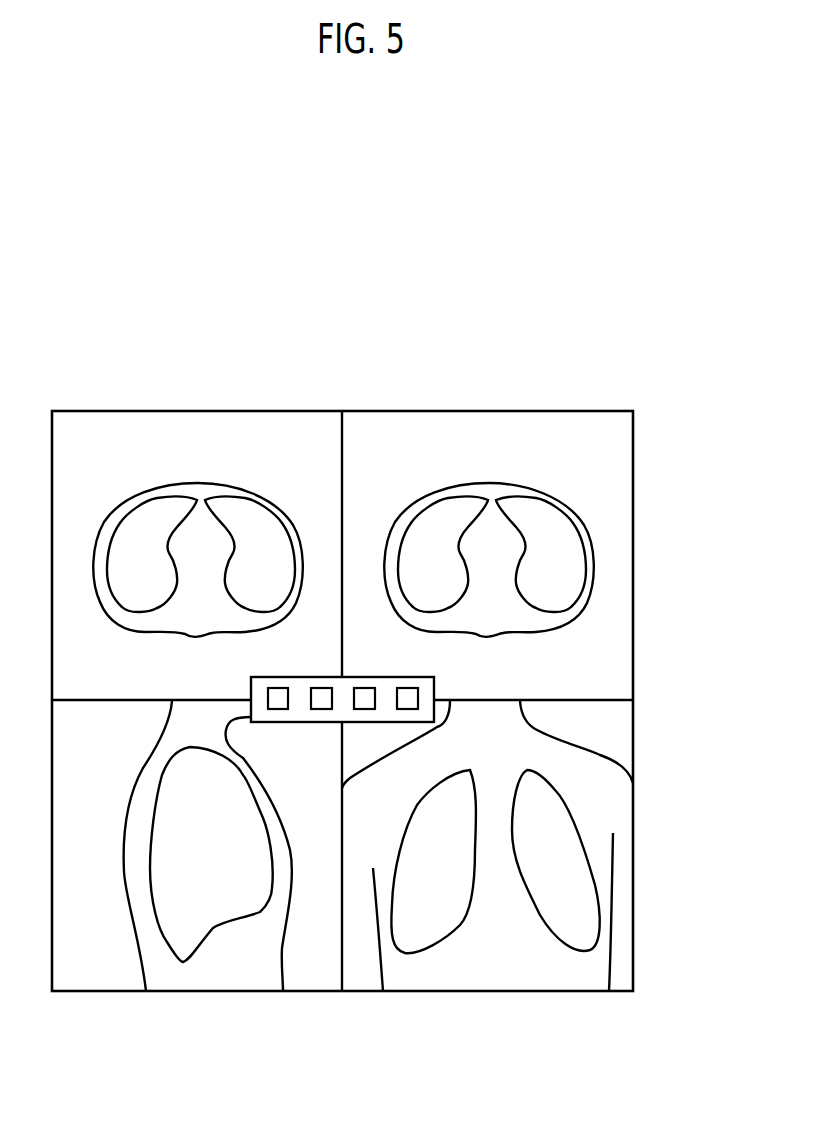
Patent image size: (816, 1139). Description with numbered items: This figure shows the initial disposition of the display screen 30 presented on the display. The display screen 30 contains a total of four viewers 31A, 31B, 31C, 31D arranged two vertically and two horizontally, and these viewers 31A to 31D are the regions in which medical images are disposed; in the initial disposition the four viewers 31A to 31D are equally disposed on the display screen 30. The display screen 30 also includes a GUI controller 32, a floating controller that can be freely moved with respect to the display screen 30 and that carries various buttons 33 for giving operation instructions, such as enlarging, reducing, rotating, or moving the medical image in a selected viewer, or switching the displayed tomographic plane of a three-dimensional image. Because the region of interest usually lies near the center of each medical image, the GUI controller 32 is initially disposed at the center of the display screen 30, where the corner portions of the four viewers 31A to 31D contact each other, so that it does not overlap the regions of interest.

The display screen 30 is at (600, 405).
The viewer 31A is at (484, 437).
The viewer 31B is at (495, 978).
The viewer 31C is at (199, 978).
The viewer 31D is at (188, 437).
The GUI controller 32 is at (437, 690).
The buttons 33 is at (322, 688).